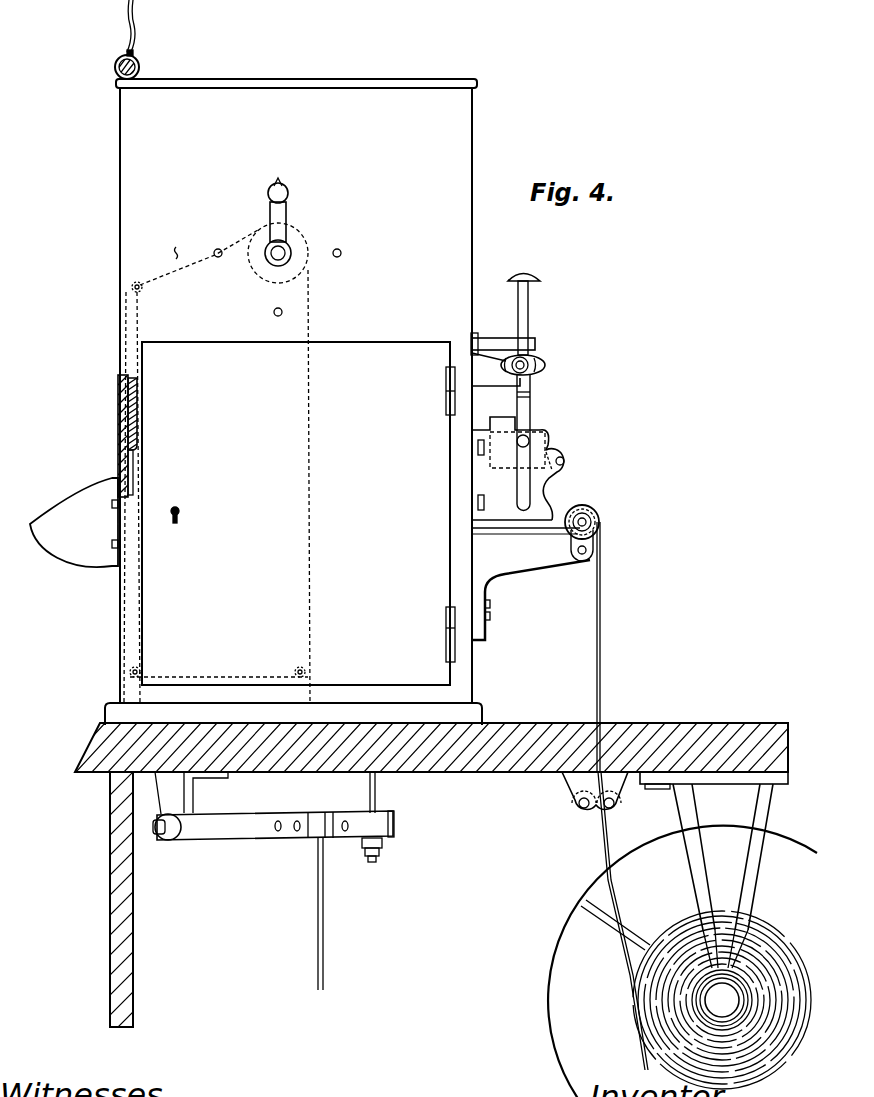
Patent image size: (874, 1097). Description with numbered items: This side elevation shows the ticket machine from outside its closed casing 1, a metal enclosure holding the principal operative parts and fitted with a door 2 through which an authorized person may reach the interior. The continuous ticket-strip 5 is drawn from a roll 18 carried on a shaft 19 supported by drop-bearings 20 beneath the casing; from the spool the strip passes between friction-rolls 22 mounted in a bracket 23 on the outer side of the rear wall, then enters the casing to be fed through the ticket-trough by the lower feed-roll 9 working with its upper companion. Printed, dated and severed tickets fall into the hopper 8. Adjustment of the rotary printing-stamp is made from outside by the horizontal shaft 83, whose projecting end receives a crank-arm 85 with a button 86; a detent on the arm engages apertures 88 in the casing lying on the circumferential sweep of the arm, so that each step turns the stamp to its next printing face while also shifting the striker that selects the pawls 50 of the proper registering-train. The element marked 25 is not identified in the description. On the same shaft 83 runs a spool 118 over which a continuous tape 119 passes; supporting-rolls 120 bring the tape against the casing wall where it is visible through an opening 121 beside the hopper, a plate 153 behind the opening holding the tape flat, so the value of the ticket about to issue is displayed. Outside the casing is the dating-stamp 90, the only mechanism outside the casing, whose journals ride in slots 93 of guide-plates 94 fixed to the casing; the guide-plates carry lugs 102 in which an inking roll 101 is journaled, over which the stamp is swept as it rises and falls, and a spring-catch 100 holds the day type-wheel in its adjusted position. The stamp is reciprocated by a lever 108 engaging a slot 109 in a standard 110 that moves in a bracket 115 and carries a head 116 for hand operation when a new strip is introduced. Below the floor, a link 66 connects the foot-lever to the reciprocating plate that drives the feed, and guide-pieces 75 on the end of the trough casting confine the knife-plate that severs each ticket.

The closed casing 1 is at (434, 545).
The door 2 is at (298, 513).
The continuous ticket-strip 5 is at (605, 796).
The hopper 8 is at (74, 522).
The lower feed-roll 9 is at (127, 28).
The roll 18 is at (688, 925).
The shaft 19 is at (722, 1000).
The drop-bearings 20 is at (682, 934).
The friction-rolls 22 is at (599, 522).
The bracket 23 is at (531, 584).
The pointer 25 is at (278, 183).
The pawls 50 is at (346, 253).
The link 66 is at (274, 881).
The guide-pieces 75 is at (275, 321).
The horizontal shaft 83 is at (272, 259).
The crank-arm 85 is at (286, 209).
The button 86 is at (291, 185).
The apertures 88 is at (338, 235).
The dating-stamp 90 is at (542, 428).
The slots 93 is at (521, 486).
The guide-plates 94 is at (512, 468).
The spring-catch 100 is at (199, 254).
The inking roll 101 is at (571, 484).
The lugs 102 is at (551, 452).
The lever 108 is at (496, 369).
The slot 109 is at (545, 366).
The standard 110 is at (528, 330).
The bracket 115 is at (503, 339).
The head 116 is at (523, 267).
The spool 118 is at (279, 261).
The continuous tape 119 is at (130, 468).
The supporting-rolls 120 is at (140, 672).
The opening 121 is at (118, 410).
The plate 153 is at (140, 412).